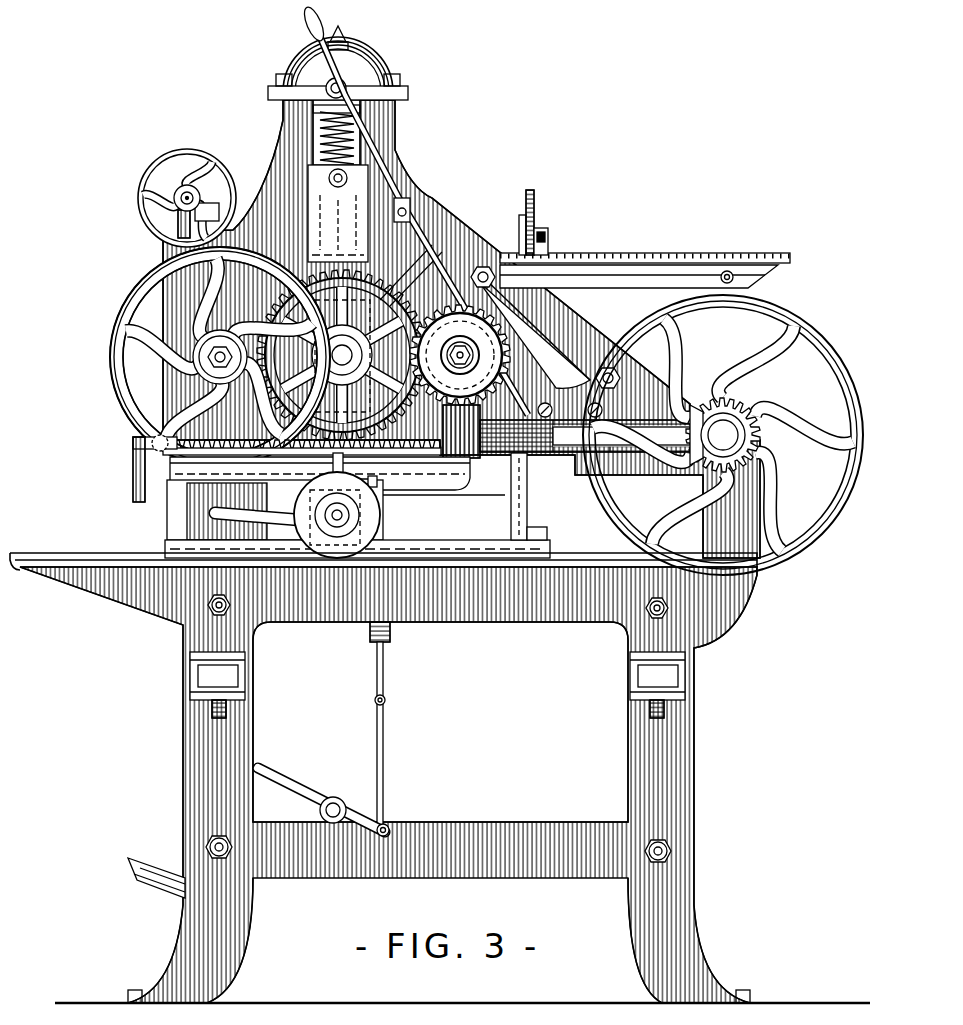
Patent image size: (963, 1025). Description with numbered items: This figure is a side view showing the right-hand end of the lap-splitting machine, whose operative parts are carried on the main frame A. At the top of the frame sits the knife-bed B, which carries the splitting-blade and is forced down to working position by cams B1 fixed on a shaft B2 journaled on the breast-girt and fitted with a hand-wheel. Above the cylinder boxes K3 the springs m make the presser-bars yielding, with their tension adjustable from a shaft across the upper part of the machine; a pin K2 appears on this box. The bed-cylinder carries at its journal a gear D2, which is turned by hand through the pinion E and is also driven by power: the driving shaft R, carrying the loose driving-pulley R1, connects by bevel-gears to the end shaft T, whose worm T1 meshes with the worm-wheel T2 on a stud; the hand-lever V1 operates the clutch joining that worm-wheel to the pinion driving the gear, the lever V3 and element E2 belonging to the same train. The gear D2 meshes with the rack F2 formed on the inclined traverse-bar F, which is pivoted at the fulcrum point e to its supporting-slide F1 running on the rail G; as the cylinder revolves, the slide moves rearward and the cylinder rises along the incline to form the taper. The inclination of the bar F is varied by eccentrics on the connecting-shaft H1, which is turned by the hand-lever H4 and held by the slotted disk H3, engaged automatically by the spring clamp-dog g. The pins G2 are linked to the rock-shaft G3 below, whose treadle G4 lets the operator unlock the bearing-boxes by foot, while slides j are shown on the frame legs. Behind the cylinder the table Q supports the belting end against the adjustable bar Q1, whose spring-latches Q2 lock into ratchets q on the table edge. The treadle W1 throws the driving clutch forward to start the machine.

The main frame A is at (461, 292).
The spring m is at (318, 138).
The pin K2 is at (349, 181).
The box K3 is at (338, 213).
The hand-lever V1 is at (305, 23).
The lever V3 is at (412, 216).
The knife-bed B is at (224, 182).
The cam B1 is at (198, 219).
The shaft B2 is at (178, 190).
The table Q is at (645, 260).
The ratchet q is at (770, 270).
The adjustable bar Q1 is at (510, 235).
The spring-latch Q2 is at (531, 236).
The gear D2 is at (342, 355).
The pinion E is at (196, 370).
The fly wheel E2 is at (112, 352).
The worm-wheel T2 is at (460, 355).
The end shaft T is at (566, 430).
The worm T1 is at (480, 470).
The traverse-bar F is at (302, 462).
The supporting-slide F1 is at (336, 498).
The rack F2 is at (133, 440).
The fulcrum point e is at (161, 435).
The connecting-shaft H1 is at (360, 516).
The slotted disk H3 is at (337, 515).
The hand-lever H4 is at (257, 513).
The spring clamp-dog g is at (348, 478).
The driving shaft R is at (723, 435).
The driving-pulley R1 is at (723, 435).
The rail G is at (440, 769).
The pin G2 is at (393, 725).
The rock-shaft G3 is at (335, 798).
The treadle G4 is at (323, 789).
The slide j is at (437, 691).
The treadle W1 is at (155, 863).